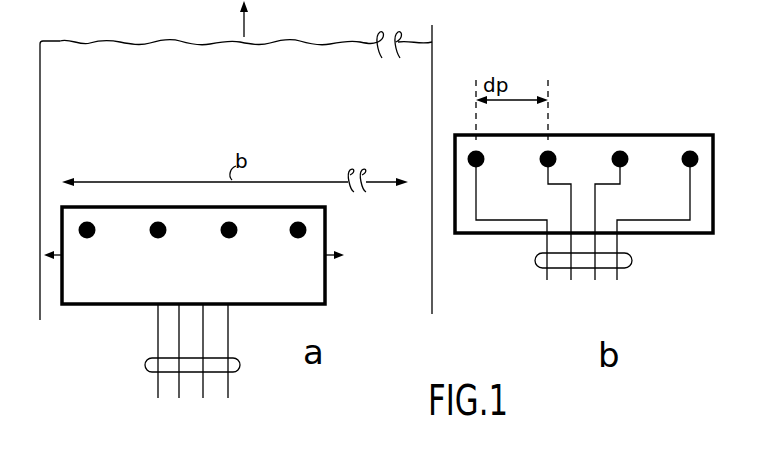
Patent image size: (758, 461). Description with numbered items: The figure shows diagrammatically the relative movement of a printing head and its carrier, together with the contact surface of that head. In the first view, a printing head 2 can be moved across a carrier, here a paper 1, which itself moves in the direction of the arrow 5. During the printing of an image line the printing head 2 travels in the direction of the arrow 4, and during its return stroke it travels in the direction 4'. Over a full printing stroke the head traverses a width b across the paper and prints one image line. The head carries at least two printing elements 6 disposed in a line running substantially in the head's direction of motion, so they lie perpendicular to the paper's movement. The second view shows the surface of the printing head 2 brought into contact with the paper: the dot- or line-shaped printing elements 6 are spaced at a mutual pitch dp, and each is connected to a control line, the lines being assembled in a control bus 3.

In FIG. 1a, the paper 1 is at (326, 104).
In FIG. 1a, the printing head 2 is at (256, 302).
In FIG. 1b, the printing head 2 is at (714, 156).
In FIG. 1a, the control bus 3 is at (238, 368).
In FIG. 1b, the control bus 3 is at (630, 265).
In FIG. 1a, the arrow 4 is at (338, 270).
In FIG. 1a, the direction 4' is at (51, 279).
In FIG. 1a, the arrow 5 is at (244, 21).
In FIG. 1a, the printing elements 6 is at (158, 239).
In FIG. 1b, the printing elements 6 is at (620, 151).